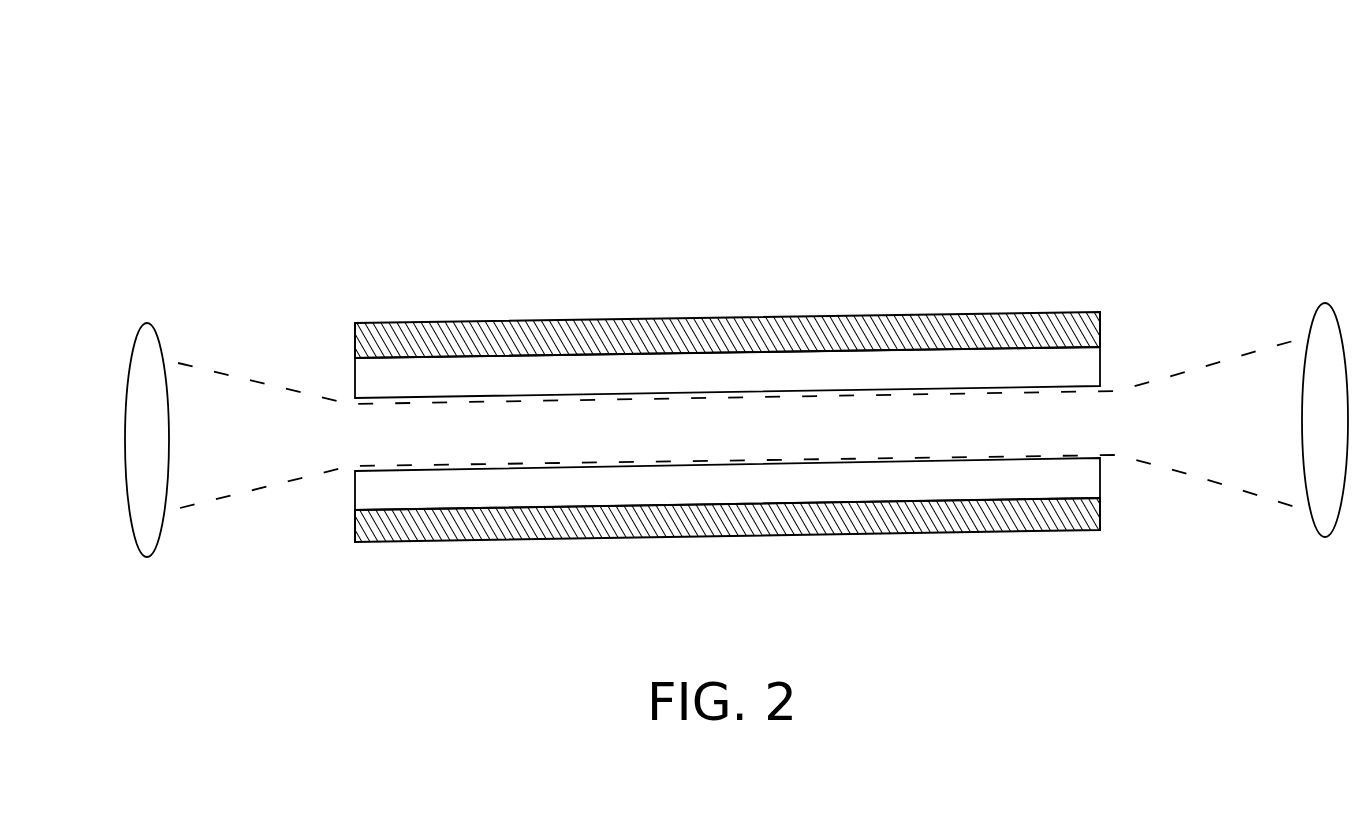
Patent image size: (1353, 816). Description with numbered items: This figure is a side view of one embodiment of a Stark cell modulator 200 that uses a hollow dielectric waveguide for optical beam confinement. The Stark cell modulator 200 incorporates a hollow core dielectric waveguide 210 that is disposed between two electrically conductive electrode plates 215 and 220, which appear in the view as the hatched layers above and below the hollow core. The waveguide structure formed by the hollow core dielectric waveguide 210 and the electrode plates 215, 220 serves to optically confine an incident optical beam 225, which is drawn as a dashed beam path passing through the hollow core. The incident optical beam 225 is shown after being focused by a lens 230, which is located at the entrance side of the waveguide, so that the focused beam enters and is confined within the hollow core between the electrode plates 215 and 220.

The Stark cell modulator 200 is at (197, 78).
The hollow core dielectric waveguide 210 is at (556, 490).
The electrically conductive electrode plate 215 is at (555, 333).
The electrically conductive electrode plate 220 is at (1000, 520).
The incident optical beam 225 is at (216, 378).
The lens 230 is at (147, 557).